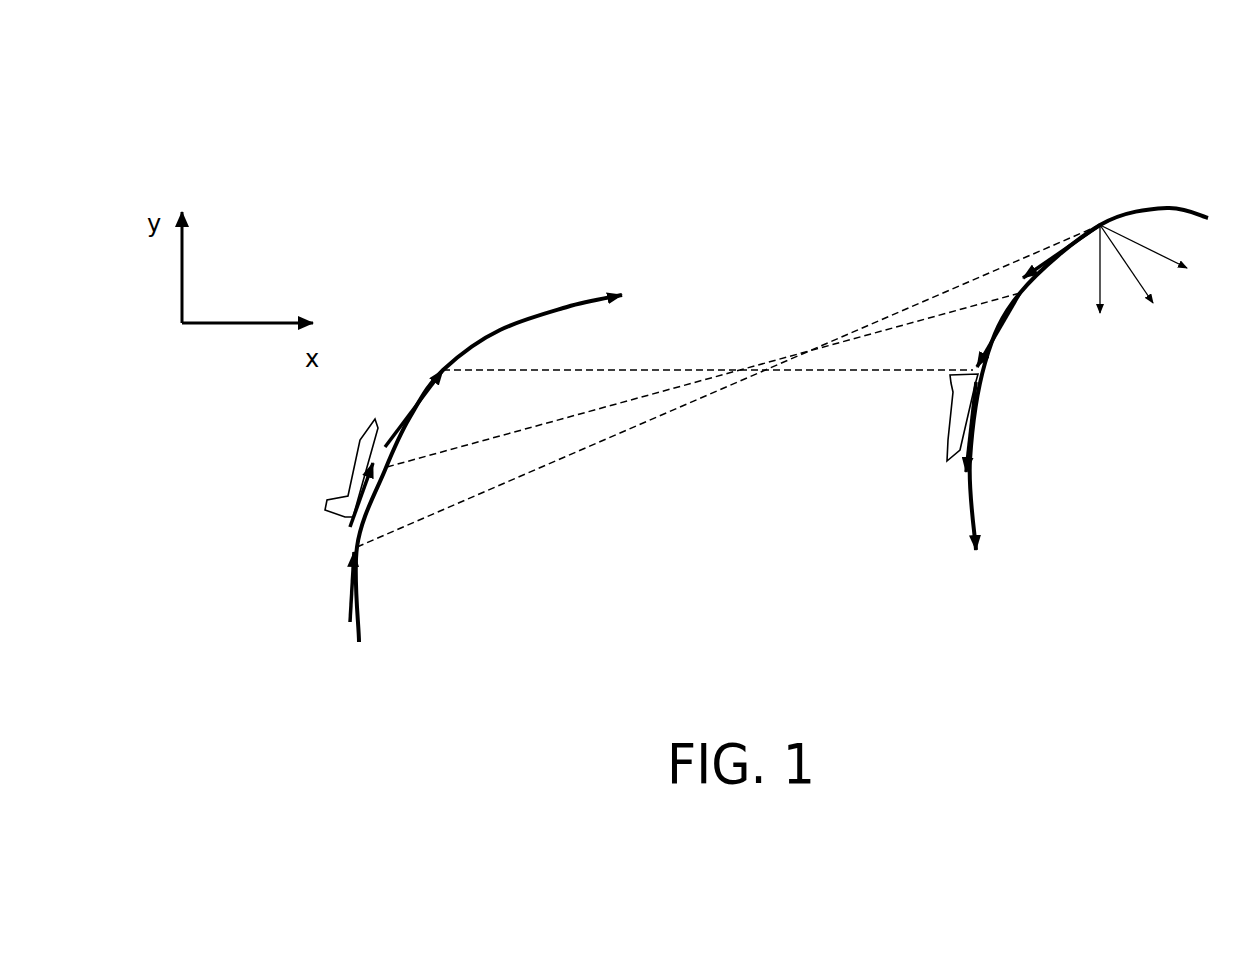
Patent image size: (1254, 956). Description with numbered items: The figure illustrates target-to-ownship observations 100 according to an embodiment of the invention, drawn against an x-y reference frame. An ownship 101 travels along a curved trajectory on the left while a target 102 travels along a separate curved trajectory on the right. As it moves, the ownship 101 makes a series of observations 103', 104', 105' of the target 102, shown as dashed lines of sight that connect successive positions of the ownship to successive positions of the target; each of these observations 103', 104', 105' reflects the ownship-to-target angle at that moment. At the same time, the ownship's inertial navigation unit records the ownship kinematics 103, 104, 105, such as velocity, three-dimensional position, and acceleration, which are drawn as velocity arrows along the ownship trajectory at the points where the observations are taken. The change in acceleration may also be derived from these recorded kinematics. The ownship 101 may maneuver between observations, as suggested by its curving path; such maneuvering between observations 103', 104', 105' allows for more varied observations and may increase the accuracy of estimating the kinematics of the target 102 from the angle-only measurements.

The tracking geometry scenario 100 is at (950, 130).
The ownship 101 is at (282, 466).
The target 102 is at (907, 433).
The ownship kinematics 103 is at (327, 586).
The ownship kinematics 104 is at (385, 495).
The ownship kinematics 105 is at (411, 383).
The observation 103' is at (1105, 235).
The observation 104' is at (1039, 322).
The observation 105' is at (1025, 414).